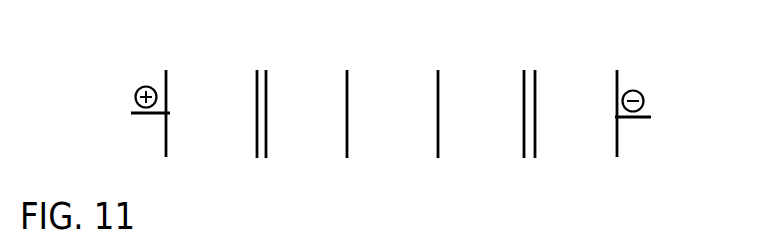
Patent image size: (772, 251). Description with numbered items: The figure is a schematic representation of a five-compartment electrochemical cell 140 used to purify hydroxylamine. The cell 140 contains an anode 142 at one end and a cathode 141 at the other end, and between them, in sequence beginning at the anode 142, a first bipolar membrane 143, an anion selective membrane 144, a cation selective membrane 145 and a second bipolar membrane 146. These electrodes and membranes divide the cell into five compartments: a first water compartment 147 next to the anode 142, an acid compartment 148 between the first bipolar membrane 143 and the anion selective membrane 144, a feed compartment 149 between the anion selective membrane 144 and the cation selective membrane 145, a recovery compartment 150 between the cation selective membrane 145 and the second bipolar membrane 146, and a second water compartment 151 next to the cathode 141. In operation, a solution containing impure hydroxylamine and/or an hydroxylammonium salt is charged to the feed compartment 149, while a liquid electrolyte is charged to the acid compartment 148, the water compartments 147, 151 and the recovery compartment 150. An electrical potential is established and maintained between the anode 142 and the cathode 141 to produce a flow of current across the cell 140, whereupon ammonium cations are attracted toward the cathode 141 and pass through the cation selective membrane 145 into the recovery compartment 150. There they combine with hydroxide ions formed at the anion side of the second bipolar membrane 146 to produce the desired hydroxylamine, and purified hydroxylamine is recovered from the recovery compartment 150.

The electrochemical cell 140 is at (391, 98).
The cathode 141 is at (624, 98).
The anode 142 is at (158, 98).
The first bipolar membrane 143 is at (260, 116).
The anion selective membrane 144 is at (347, 116).
The cation selective membrane 145 is at (437, 116).
The second bipolar membrane 146 is at (530, 116).
The first water compartment 147 is at (212, 117).
The acid compartment 148 is at (307, 117).
The feed compartment 149 is at (392, 117).
The recovery compartment 150 is at (481, 117).
The second water compartment 151 is at (576, 117).